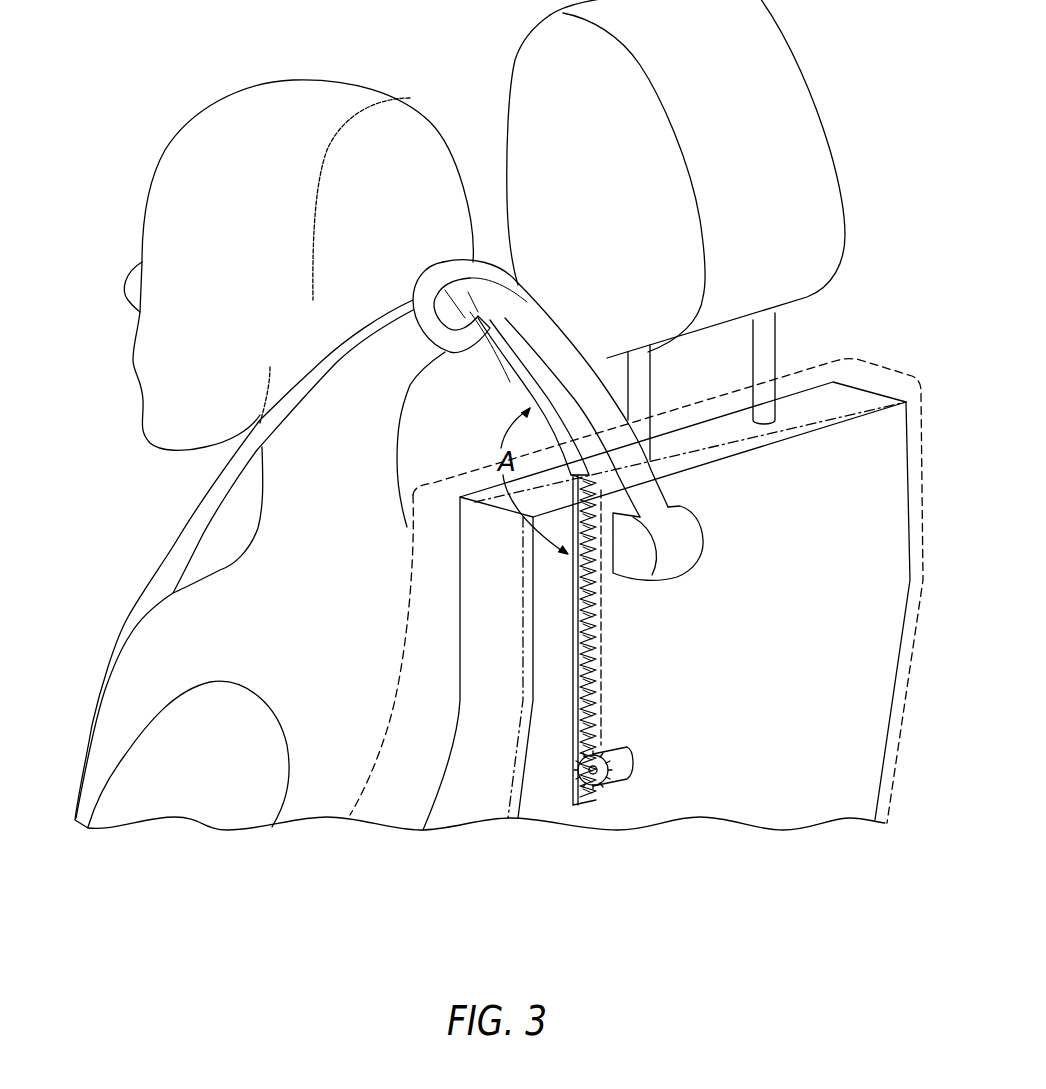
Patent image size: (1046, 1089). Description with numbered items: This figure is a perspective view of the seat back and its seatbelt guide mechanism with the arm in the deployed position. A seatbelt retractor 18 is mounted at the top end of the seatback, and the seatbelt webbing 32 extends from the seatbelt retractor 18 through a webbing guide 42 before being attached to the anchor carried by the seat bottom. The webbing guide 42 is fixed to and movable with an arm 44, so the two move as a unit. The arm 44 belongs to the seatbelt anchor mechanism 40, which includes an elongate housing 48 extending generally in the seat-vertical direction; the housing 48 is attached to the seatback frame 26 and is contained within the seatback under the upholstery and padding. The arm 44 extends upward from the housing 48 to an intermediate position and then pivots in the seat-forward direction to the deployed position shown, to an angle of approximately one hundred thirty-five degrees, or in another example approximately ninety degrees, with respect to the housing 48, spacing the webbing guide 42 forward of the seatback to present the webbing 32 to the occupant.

The seatbelt retractor 18 is at (708, 537).
The seatback frame 26 is at (523, 782).
The seatbelt webbing 32 is at (175, 533).
The seatbelt anchor mechanism 40 is at (536, 249).
The webbing guide 42 is at (440, 262).
The arm 44 is at (514, 373).
The housing 48 is at (602, 668).